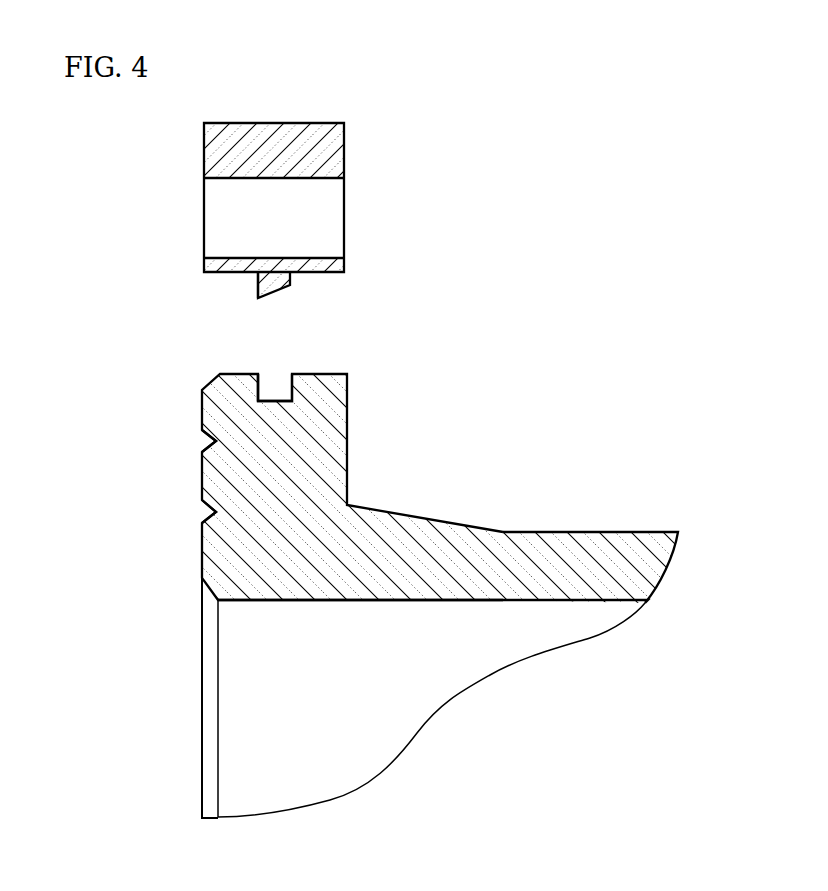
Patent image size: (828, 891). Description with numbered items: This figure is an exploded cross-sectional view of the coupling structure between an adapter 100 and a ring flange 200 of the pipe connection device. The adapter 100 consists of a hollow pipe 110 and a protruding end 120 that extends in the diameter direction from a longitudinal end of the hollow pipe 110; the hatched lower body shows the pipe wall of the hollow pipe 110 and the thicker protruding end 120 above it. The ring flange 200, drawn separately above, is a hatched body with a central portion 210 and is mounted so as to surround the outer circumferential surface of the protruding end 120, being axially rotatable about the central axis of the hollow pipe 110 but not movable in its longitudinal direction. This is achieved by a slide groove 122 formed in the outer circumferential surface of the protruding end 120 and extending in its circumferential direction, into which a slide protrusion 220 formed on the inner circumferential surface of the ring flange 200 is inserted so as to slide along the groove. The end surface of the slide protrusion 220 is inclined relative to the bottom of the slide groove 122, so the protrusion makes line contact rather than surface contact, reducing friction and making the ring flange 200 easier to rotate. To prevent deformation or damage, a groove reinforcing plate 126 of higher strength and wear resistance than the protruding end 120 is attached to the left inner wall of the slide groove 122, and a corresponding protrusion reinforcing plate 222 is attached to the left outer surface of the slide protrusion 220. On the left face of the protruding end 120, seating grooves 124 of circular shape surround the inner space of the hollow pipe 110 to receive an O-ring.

The adapter 100 is at (585, 431).
The hollow pipe 110 is at (600, 563).
The protruding end 120 is at (330, 447).
The slide groove 122 is at (282, 386).
The seating groove 124 is at (203, 511).
The groove reinforcing plate 126 is at (266, 386).
The ring flange 200 is at (330, 152).
The cap body 210 is at (226, 212).
The slide protrusion 220 is at (290, 284).
The protrusion reinforcing plate 222 is at (257, 285).